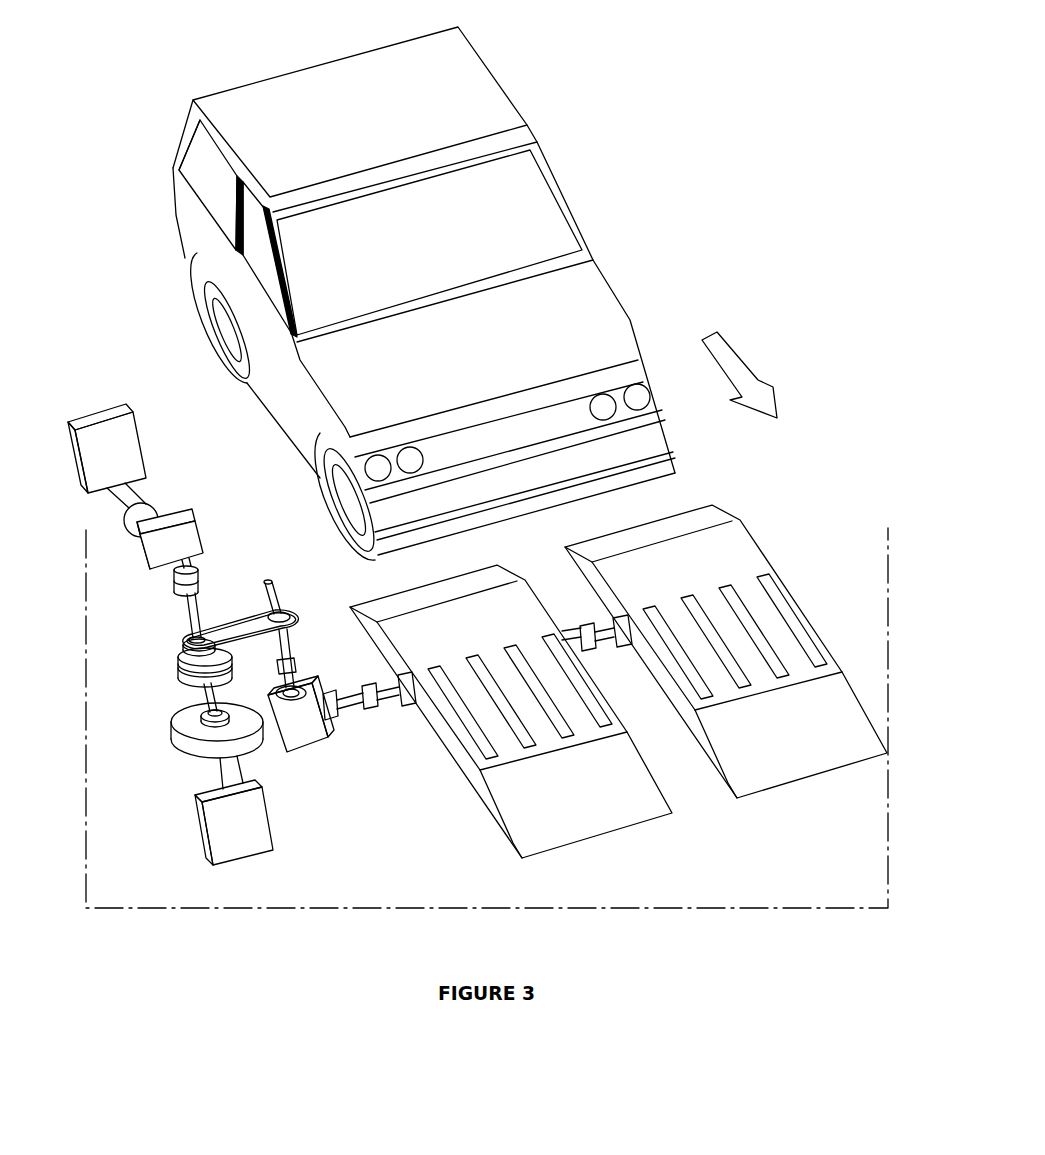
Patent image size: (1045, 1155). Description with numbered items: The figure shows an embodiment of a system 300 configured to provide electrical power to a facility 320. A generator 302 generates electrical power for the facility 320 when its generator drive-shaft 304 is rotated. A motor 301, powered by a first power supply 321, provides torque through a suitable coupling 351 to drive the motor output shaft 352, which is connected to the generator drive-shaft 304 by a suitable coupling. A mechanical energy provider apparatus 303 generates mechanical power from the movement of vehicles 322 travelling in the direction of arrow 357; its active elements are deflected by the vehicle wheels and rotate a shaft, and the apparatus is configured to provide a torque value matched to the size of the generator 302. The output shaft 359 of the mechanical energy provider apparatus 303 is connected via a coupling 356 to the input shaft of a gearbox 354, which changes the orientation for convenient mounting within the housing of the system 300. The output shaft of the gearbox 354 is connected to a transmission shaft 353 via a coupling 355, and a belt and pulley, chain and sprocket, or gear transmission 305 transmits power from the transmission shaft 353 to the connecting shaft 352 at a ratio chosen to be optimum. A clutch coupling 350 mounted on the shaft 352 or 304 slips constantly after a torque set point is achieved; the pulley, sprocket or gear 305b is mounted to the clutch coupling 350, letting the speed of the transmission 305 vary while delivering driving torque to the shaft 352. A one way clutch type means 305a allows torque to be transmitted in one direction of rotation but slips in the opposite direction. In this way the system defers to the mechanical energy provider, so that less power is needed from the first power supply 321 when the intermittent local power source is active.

The system 300 is at (320, 912).
The motor 301 is at (192, 515).
The generator 302 is at (187, 758).
The mechanical energy provider apparatus 303 is at (478, 800).
The generator drive-shaft 304 is at (205, 697).
The transmission 305 is at (237, 620).
The one way clutch type means 305a is at (288, 608).
The pulley, sprocket or gear 305b is at (187, 645).
The facility 320 is at (205, 850).
The first power supply 321 is at (105, 407).
The vehicle 322 is at (643, 318).
The clutch coupling 350 is at (183, 672).
The coupling 351 is at (175, 587).
The motor output shaft 352 is at (188, 613).
The transmission shaft 353 is at (275, 592).
The gearbox 354 is at (298, 750).
The coupling 355 is at (293, 660).
The coupling 356 is at (365, 708).
The arrow 357 is at (742, 363).
The output shaft 359 is at (395, 703).